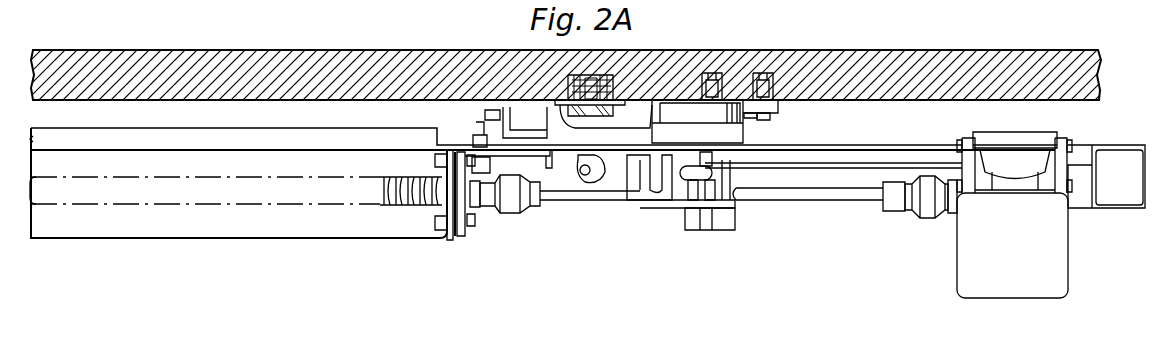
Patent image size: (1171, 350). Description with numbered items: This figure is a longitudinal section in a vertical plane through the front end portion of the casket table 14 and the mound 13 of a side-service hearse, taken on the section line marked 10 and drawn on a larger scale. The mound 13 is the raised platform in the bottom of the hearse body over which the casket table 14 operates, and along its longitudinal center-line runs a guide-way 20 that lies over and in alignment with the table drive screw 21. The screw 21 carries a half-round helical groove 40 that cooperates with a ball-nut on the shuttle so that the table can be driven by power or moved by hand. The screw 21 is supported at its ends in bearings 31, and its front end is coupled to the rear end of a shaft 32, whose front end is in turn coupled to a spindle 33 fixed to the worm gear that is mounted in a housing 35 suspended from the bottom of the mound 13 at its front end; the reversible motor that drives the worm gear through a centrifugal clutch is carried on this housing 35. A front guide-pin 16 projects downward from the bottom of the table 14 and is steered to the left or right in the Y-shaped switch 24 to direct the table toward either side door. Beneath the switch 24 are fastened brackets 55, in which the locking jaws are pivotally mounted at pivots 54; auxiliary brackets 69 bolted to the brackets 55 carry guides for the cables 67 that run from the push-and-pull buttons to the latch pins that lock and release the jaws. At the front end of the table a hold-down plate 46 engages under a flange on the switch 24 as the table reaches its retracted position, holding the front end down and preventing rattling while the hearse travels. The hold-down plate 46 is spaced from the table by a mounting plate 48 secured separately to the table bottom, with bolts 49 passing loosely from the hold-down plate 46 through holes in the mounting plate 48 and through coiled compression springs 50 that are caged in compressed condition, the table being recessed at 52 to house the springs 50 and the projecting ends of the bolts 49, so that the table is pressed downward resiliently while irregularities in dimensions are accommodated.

The section line 10 is at (1032, 122).
The mound 13 is at (1120, 145).
The casket table 14 is at (880, 52).
The front guide-pin 16 is at (697, 124).
The guide-way 20 is at (368, 132).
The table drive screw 21 is at (395, 207).
The Y-shaped switch 24 is at (652, 105).
The bearings 31 is at (466, 212).
The shaft 32 is at (800, 202).
The spindle 33 is at (945, 207).
The housing 35 is at (1065, 214).
The helical groove 40 is at (412, 177).
The hold-down plate 46 is at (770, 116).
The mounting plate 48 is at (778, 106).
The bolts 49 is at (750, 118).
The coiled compression springs 50 is at (780, 100).
The recess 52 is at (763, 73).
The pivots 54 is at (585, 176).
The brackets 55 is at (622, 192).
The cables 67 is at (742, 176).
The auxiliary brackets 69 is at (737, 203).